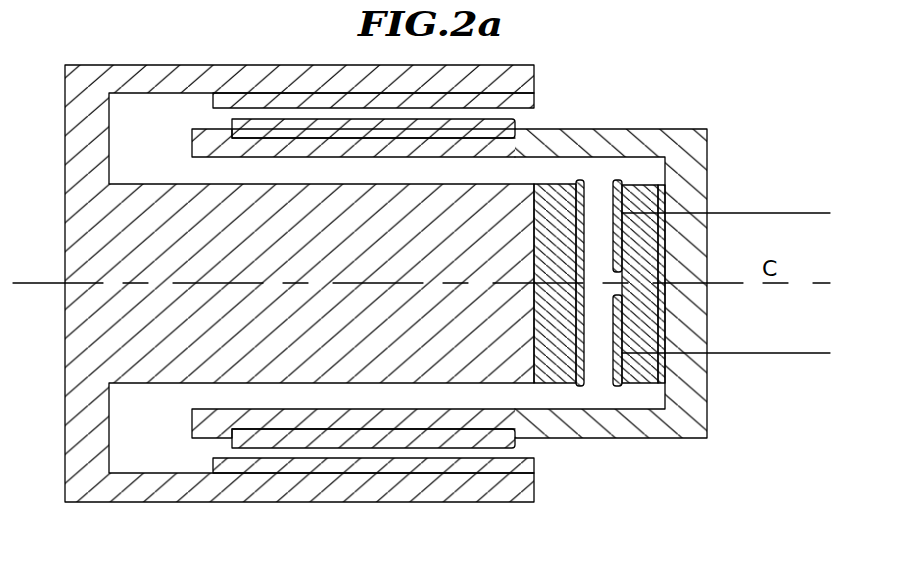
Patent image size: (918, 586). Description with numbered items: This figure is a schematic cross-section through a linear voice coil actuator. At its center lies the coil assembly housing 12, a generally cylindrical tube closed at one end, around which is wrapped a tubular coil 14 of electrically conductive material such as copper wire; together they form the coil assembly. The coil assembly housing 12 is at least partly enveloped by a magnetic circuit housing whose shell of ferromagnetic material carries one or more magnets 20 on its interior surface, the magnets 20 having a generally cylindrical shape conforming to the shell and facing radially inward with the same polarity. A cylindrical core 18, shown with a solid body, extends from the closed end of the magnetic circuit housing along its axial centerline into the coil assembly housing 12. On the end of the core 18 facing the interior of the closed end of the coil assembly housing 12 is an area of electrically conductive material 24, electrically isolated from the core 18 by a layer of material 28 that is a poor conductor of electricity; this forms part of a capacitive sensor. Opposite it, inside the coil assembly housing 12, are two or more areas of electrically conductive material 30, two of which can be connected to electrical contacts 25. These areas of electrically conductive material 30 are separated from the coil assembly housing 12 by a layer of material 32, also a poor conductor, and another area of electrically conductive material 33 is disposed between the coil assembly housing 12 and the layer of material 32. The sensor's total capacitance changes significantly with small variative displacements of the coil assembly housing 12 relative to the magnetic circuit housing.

The coil assembly housing 12 is at (707, 152).
The tubular coil 14 is at (232, 132).
The core 18 is at (325, 360).
The magnets 20 is at (304, 93).
The area of electrically conductive material 24 is at (597, 175).
The electrical contacts 25 is at (762, 353).
The layer of material 28 is at (558, 375).
The areas of electrically conductive material 30 is at (606, 182).
The layer of material 32 is at (650, 320).
The area of electrically conductive material 33 is at (660, 190).